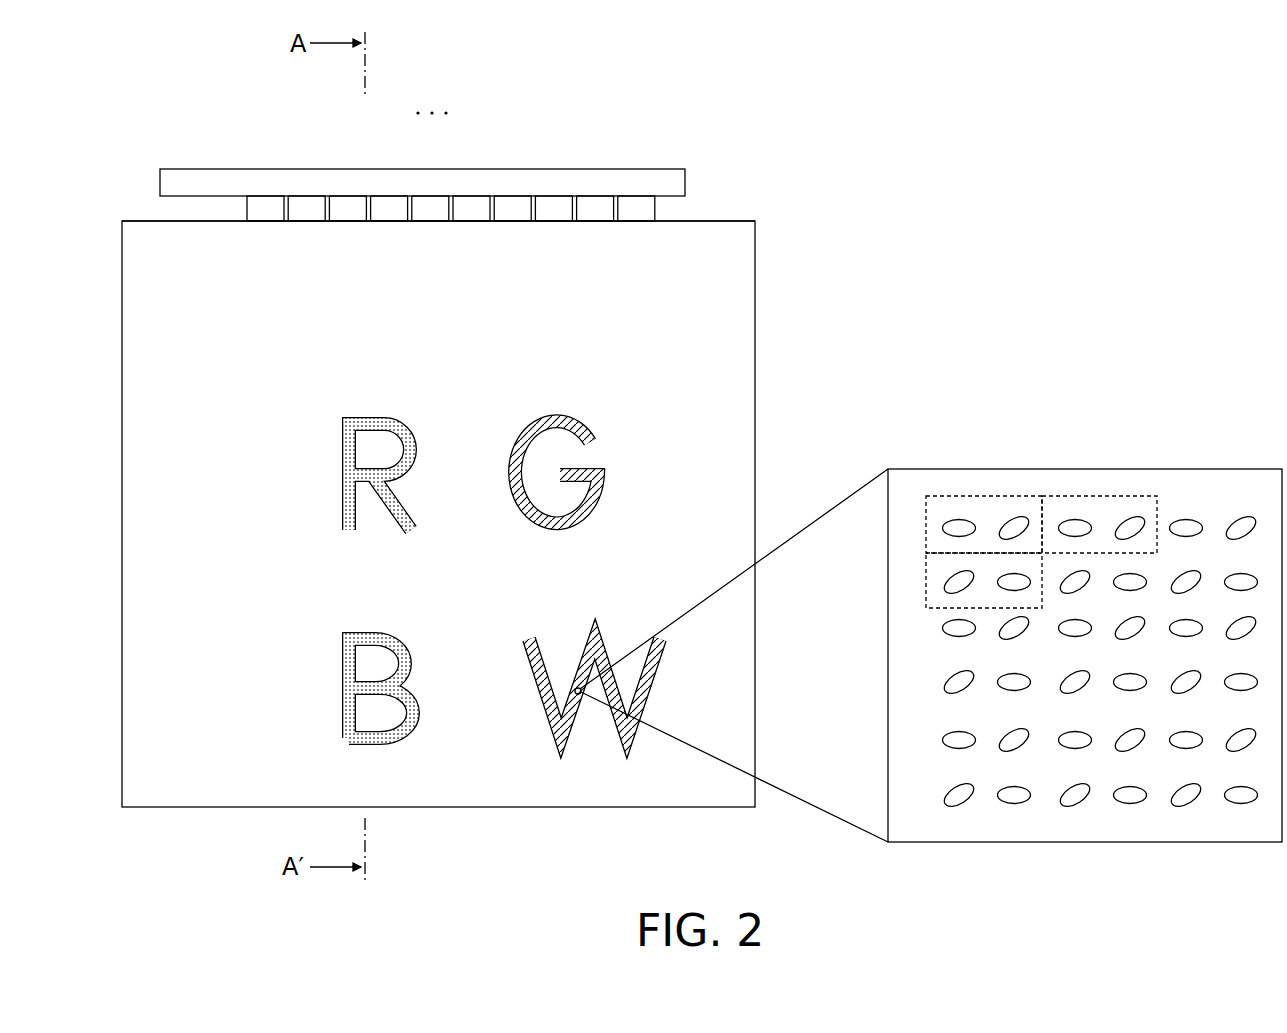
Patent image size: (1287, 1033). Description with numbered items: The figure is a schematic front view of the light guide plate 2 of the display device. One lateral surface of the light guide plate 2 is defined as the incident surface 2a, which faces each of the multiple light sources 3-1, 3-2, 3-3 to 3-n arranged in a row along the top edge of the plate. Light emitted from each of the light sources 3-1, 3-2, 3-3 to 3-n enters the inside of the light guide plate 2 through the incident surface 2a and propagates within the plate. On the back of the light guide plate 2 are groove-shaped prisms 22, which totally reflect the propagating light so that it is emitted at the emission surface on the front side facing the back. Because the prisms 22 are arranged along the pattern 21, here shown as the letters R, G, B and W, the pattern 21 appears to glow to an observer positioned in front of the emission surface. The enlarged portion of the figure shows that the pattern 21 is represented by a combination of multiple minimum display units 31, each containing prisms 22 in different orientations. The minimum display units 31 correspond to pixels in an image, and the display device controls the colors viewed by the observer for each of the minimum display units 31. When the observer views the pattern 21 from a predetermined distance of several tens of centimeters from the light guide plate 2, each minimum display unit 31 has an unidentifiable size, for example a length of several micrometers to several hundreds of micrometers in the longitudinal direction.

The light guide plate 2 is at (757, 297).
The incident surface 2a is at (724, 221).
The light source 3-1 is at (265, 207).
The light source 3-2 is at (305, 207).
The light source 3-3 is at (348, 207).
The light source 3-n is at (640, 207).
The pattern 21 is at (312, 405).
The groove-shaped prism 22 is at (1019, 795).
The minimum display unit 31 is at (1079, 496).